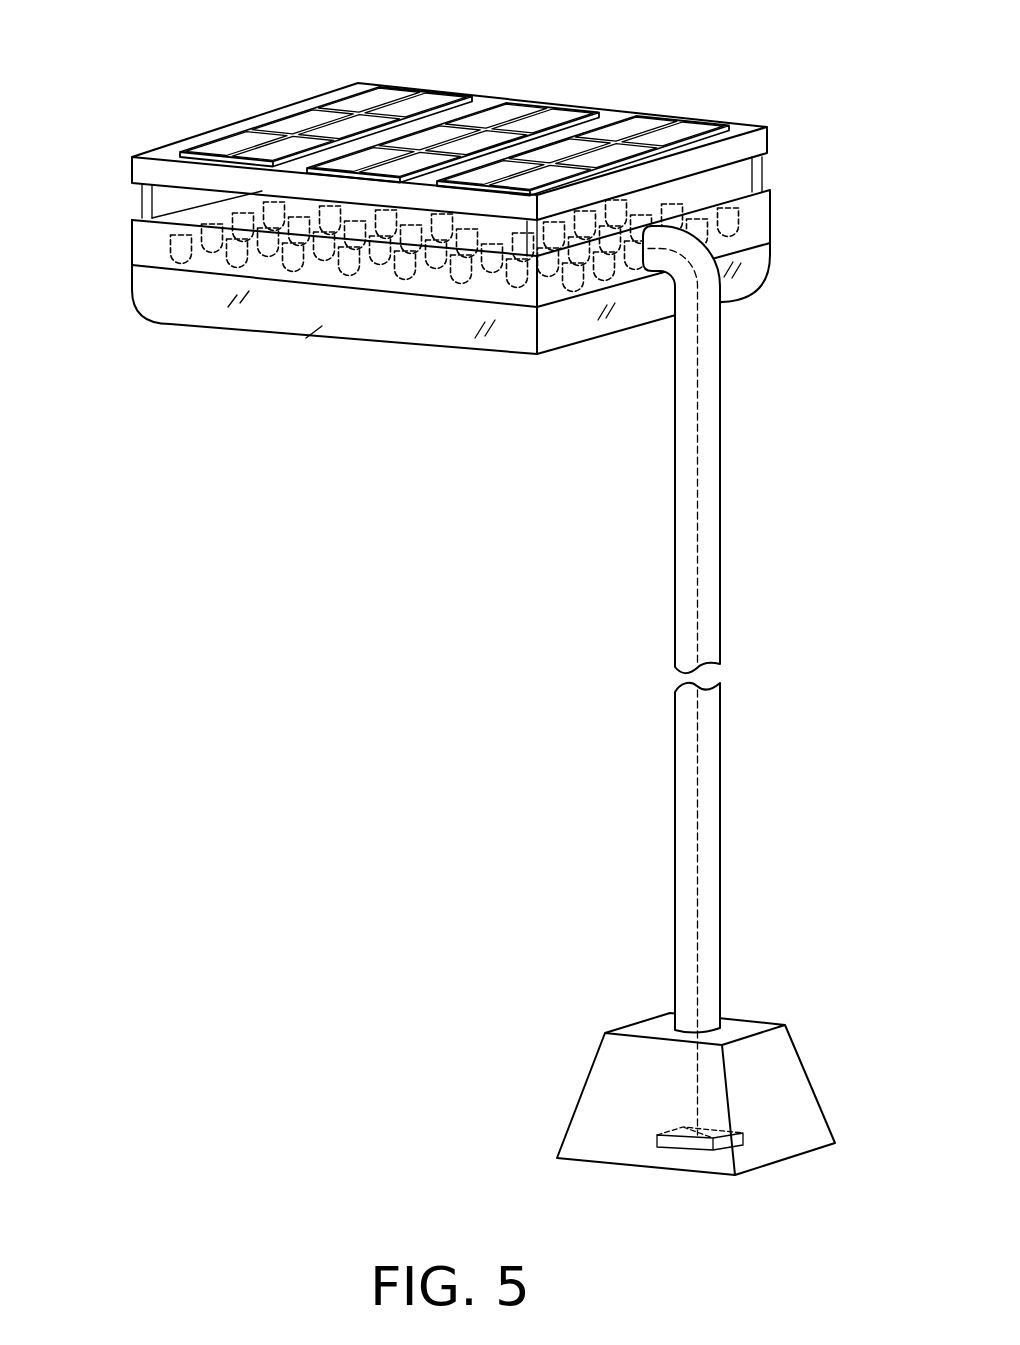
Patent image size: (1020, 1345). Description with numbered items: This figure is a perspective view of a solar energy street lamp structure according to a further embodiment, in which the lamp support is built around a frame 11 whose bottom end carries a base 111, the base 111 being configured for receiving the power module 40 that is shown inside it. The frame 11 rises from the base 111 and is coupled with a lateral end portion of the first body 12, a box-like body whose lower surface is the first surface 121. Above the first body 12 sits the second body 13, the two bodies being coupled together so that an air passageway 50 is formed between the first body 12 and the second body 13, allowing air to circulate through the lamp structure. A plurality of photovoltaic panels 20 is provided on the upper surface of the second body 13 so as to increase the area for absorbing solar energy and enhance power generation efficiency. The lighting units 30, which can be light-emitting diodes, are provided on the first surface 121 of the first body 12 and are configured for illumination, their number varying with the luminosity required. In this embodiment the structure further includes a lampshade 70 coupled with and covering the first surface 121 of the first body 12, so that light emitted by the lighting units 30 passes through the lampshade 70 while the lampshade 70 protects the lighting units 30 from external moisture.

The frame 11 is at (722, 480).
The base 111 is at (783, 1070).
The first body 12 is at (760, 215).
The first surface 121 is at (743, 247).
The second body 13 is at (770, 132).
The photovoltaic panel 20 is at (541, 118).
The lighting unit 30 is at (165, 257).
The power module 40 is at (680, 1128).
The air passageway 50 is at (155, 193).
The lampshade 70 is at (322, 325).